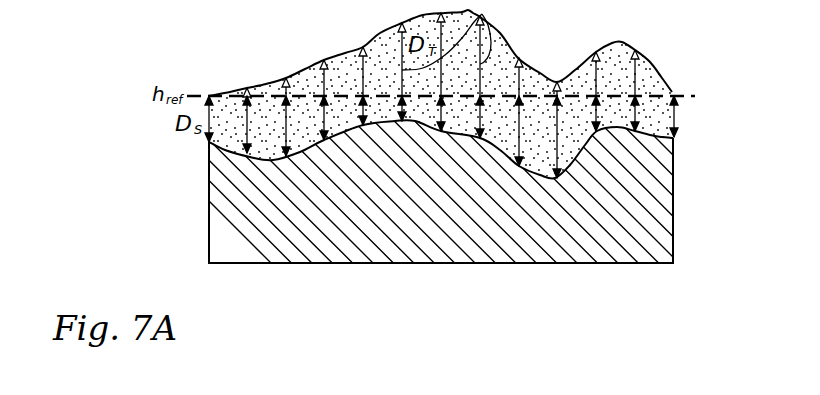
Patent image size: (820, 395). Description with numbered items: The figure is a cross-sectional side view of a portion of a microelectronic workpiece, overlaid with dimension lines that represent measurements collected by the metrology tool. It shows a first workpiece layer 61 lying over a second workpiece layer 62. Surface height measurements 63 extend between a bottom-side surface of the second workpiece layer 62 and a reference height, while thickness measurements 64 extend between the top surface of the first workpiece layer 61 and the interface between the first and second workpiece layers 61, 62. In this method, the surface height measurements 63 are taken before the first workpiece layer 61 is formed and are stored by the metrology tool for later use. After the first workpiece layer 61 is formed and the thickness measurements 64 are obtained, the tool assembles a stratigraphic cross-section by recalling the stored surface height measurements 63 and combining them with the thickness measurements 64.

The first workpiece layer 61 is at (650, 70).
The second workpiece layer 62 is at (657, 187).
The surface height measurements 63 is at (558, 122).
The thickness measurements 64 is at (484, 14).